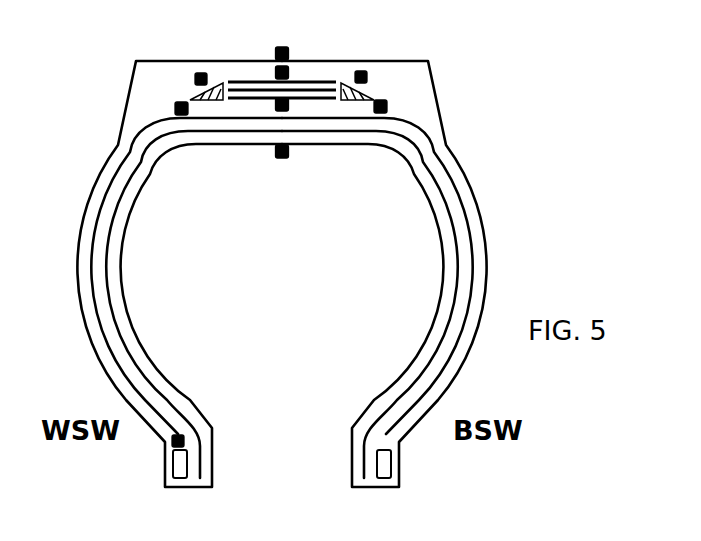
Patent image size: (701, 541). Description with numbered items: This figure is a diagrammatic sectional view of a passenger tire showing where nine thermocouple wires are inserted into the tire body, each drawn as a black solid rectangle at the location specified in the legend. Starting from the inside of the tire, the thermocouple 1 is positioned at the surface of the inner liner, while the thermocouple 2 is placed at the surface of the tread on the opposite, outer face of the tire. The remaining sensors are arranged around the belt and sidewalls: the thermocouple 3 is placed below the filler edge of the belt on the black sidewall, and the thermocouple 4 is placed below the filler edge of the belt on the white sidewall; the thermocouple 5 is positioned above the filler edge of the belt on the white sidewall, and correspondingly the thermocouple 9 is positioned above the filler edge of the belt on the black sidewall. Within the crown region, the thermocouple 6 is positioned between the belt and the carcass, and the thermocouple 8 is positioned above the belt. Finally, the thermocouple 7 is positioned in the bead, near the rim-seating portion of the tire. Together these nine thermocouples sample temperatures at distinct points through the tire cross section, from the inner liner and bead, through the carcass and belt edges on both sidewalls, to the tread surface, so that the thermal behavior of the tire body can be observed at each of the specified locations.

The thermocouple 1 is at (280, 158).
The thermocouple 2 is at (276, 51).
The thermocouple 3 is at (386, 106).
The thermocouple 4 is at (177, 109).
The thermocouple 5 is at (196, 80).
The thermocouple 6 is at (278, 108).
The thermocouple 7 is at (172, 445).
The thermocouple 8 is at (288, 72).
The thermocouple 9 is at (366, 77).